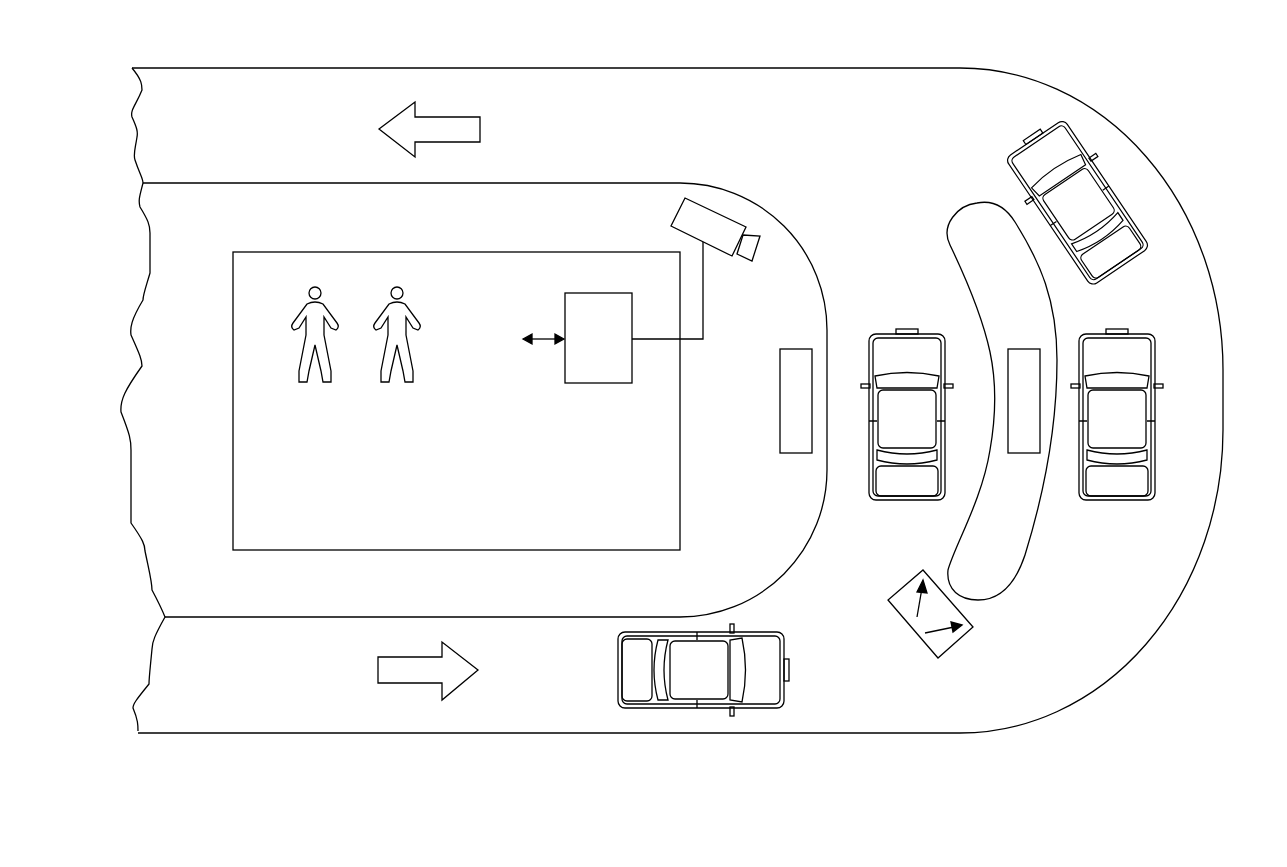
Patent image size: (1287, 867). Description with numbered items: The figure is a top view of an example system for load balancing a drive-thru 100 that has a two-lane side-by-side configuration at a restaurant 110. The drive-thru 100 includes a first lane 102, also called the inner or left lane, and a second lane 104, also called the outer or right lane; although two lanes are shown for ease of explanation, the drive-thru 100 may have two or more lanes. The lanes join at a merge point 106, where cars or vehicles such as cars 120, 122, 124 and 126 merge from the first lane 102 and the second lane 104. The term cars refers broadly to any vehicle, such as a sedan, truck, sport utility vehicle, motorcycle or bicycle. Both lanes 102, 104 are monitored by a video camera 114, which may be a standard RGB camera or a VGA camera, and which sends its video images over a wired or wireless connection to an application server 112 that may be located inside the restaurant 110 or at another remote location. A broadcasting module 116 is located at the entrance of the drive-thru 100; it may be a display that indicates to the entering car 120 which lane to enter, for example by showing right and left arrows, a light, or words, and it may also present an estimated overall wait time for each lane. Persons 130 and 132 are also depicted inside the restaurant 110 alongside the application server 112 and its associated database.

The drive-thru 100 is at (1083, 100).
The first lane 102 is at (825, 540).
The second lane 104 is at (1162, 587).
The merge point 106 is at (822, 98).
The restaurant 110 is at (247, 401).
The application server 112 is at (563, 365).
The video camera 114 is at (718, 212).
The broadcasting module 116 is at (960, 643).
The car 120 is at (620, 660).
The car 122 is at (907, 326).
The car 124 is at (1013, 143).
The car 126 is at (1155, 415).
The person 130 is at (325, 300).
The person 132 is at (783, 459).